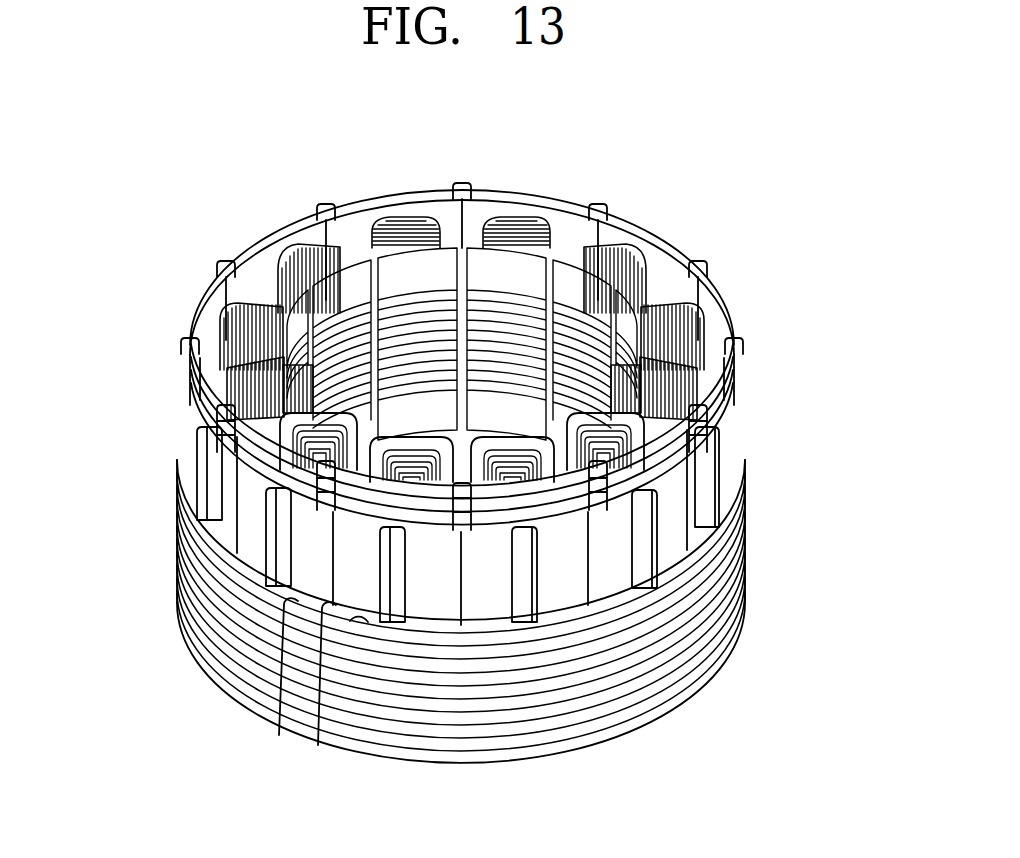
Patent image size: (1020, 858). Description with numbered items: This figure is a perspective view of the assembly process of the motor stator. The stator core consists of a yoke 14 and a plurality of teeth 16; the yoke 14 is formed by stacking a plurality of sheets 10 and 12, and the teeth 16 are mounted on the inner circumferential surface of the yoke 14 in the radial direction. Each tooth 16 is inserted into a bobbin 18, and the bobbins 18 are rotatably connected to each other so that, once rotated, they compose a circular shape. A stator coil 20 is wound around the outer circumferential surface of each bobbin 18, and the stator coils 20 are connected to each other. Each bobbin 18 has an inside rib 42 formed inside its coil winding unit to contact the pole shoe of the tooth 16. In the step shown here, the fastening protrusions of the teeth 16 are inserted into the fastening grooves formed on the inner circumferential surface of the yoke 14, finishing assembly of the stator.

The sheet 10 is at (279, 735).
The sheet 12 is at (368, 622).
The yoke 14 is at (358, 818).
The tooth 16 is at (519, 612).
The bobbin 18 is at (563, 218).
The stator coil 20 is at (617, 262).
The inside rib 42 is at (268, 470).